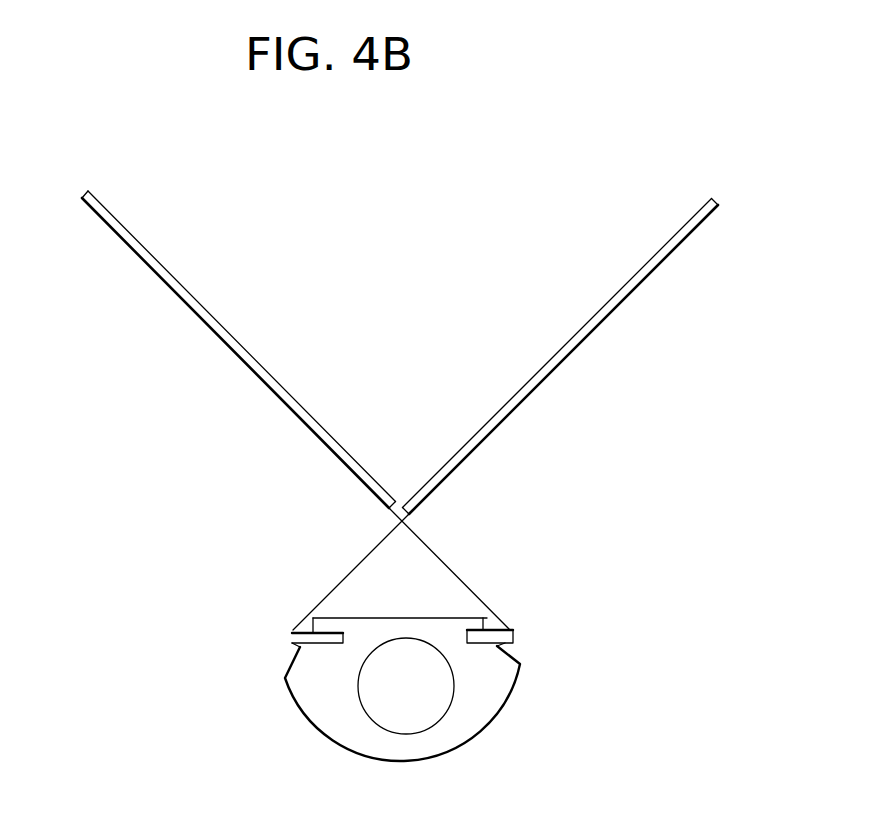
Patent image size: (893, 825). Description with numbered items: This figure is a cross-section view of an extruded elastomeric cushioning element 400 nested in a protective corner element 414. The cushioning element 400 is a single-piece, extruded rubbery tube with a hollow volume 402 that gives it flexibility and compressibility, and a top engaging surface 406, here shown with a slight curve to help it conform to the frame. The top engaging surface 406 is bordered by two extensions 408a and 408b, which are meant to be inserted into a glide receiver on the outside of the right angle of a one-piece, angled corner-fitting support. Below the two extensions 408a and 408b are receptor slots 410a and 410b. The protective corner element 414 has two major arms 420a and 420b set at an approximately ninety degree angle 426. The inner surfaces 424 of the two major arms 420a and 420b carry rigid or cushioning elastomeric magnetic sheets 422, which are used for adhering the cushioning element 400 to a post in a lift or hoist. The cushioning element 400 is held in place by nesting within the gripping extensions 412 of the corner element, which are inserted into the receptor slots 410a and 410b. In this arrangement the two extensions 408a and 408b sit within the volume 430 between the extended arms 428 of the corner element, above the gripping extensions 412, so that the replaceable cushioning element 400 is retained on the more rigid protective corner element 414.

The insertable cushioning element 400 is at (512, 723).
The hollow volume 402 is at (392, 700).
The top engaging surface 406 is at (415, 617).
The extension 408a is at (495, 613).
The extension 408b is at (312, 613).
The receptor slot 410a is at (513, 639).
The receptor slot 410b is at (292, 643).
The gripping extensions 412 is at (293, 621).
The protective corner element 414 is at (374, 533).
The major arm 420a is at (242, 367).
The major arm 420b is at (523, 407).
The elastomeric magnetic sheets 422 is at (230, 337).
The inner surfaces 424 is at (193, 293).
The angle 426 is at (402, 482).
The extended arms 428 is at (437, 562).
The volume 430 is at (447, 593).